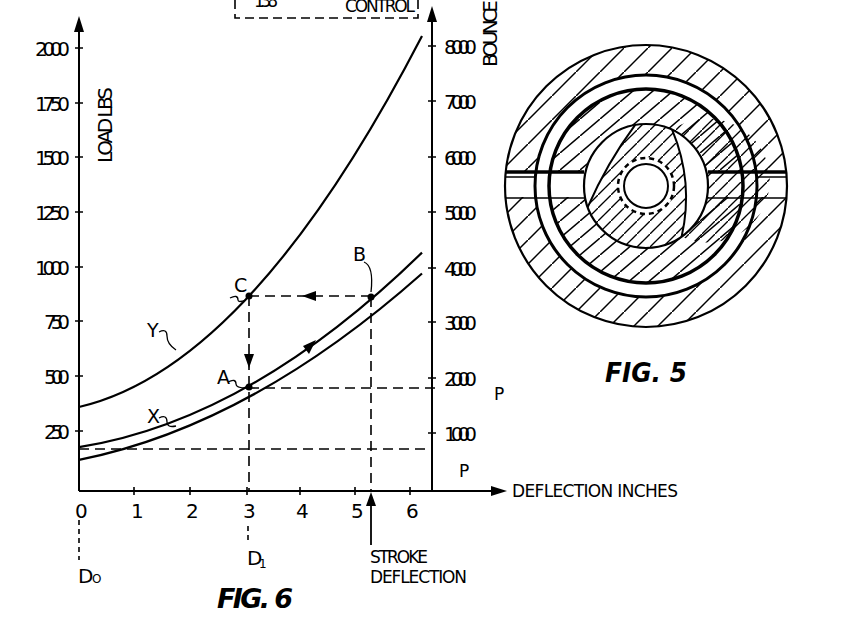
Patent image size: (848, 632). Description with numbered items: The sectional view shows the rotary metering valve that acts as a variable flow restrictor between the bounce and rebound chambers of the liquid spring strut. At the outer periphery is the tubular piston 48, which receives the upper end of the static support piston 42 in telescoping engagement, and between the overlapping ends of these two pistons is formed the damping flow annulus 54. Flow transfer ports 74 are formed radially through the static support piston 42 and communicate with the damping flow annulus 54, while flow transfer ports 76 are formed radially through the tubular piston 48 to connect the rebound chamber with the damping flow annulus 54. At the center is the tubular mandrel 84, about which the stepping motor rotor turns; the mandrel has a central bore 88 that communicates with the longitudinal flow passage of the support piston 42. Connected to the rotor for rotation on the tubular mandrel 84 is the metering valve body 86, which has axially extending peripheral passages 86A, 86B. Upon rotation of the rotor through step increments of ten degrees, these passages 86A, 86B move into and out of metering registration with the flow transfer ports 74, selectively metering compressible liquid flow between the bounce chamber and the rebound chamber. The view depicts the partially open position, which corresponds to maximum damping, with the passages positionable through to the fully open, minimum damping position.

The support piston 42 is at (658, 100).
The tubular piston 48 is at (725, 80).
The damping flow annulus 54 is at (595, 279).
The flow transfer ports 74 is at (738, 155).
The flow transfer ports 76 is at (760, 178).
The tubular mandrel 84 is at (713, 288).
The metering valve body 86 is at (652, 166).
The peripheral passage 86A is at (693, 212).
The peripheral passage 86B is at (605, 147).
The central bore 88 is at (647, 206).